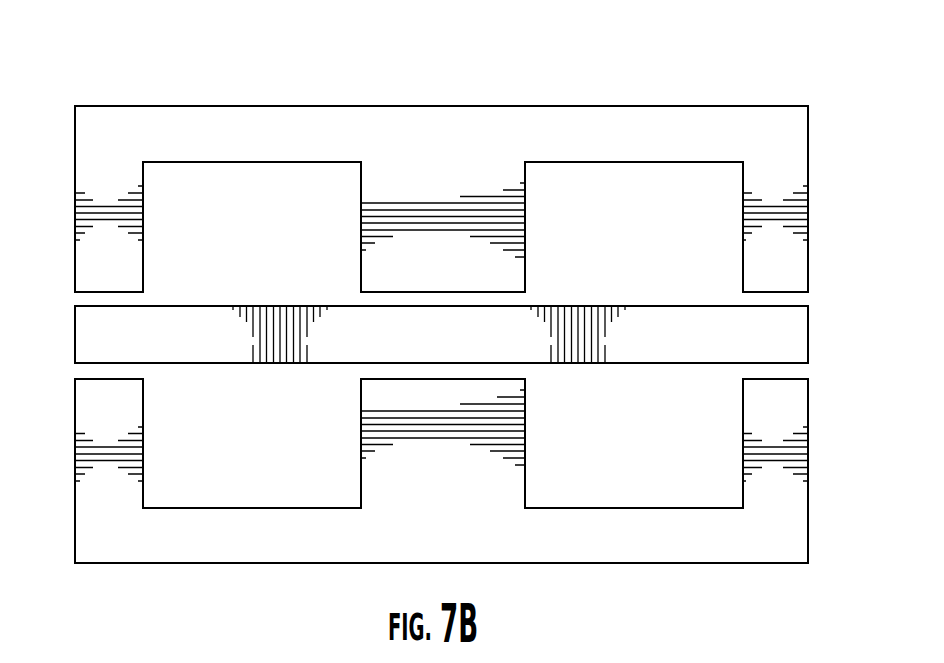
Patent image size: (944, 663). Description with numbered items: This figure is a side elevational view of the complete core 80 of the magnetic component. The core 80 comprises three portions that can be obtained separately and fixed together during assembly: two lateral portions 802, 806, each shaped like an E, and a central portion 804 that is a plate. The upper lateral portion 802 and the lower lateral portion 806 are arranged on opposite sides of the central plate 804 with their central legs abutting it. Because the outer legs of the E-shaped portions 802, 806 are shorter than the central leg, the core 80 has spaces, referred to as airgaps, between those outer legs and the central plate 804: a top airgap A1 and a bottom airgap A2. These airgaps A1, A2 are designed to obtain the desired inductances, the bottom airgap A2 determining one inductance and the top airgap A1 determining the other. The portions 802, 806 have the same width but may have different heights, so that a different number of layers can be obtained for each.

The core 80 is at (57, 86).
The lateral portion 802 is at (809, 101).
The central portion 804 is at (817, 306).
The lateral portion 806 is at (817, 402).
The top airgap A1 is at (74, 298).
The bottom airgap A2 is at (73, 373).